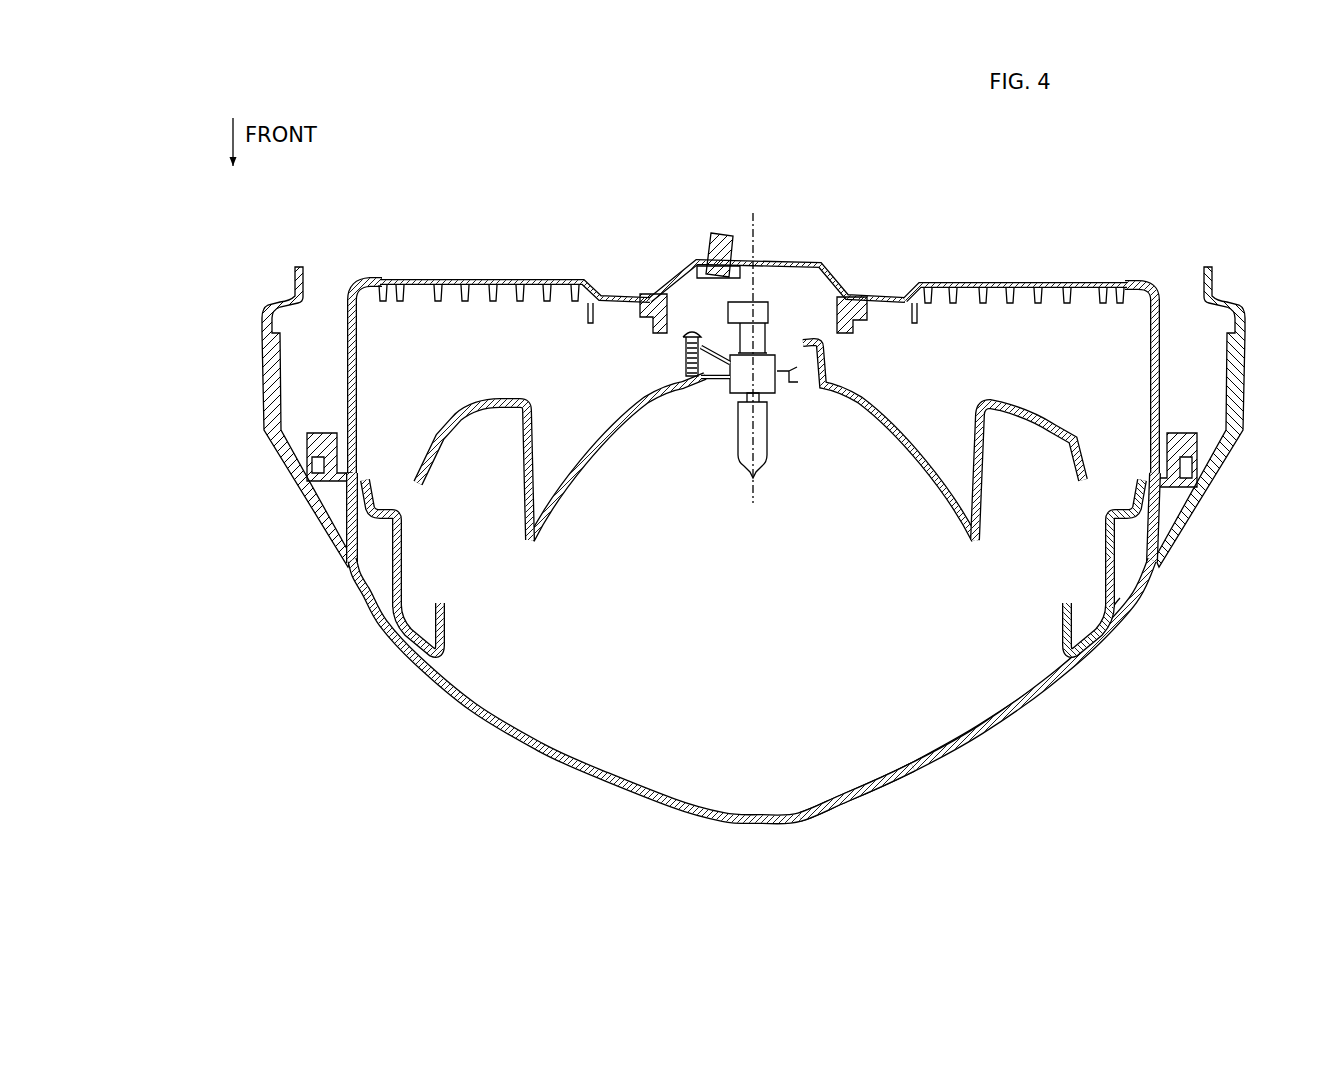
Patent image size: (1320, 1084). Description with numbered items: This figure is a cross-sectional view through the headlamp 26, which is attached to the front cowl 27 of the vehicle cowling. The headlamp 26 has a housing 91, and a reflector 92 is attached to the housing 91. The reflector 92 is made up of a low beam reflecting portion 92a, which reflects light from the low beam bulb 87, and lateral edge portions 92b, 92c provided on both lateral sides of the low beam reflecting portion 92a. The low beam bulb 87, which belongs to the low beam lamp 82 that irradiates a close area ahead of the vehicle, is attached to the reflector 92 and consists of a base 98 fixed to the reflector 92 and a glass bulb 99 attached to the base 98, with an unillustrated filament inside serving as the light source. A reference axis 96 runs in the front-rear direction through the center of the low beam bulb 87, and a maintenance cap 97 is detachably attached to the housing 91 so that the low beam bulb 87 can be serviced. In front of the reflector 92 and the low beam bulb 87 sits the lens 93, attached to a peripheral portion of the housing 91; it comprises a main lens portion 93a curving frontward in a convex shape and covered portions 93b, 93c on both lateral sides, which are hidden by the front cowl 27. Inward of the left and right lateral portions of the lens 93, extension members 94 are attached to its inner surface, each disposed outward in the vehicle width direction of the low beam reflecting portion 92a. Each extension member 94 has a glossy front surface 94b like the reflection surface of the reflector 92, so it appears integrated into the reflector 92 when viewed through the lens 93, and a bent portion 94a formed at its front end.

The headlamp 26 is at (350, 798).
The front cowl 27 is at (262, 437).
The low beam lamp 82 is at (958, 766).
The low beam bulb 87 is at (764, 290).
The housing 91 is at (485, 280).
The reflector 92 is at (861, 394).
The low beam reflecting portion 92a is at (902, 450).
The lateral edge portion 92b is at (1052, 426).
The lateral edge portion 92c is at (455, 418).
The lens 93 is at (758, 681).
The main lens portion 93a is at (856, 804).
The covered portion 93b is at (1163, 512).
The covered portion 93c is at (346, 513).
The extension member 94 is at (757, 597).
The bent portion 94a is at (425, 658).
The front surface 94b is at (383, 583).
The reference axis 96 is at (752, 216).
The maintenance cap 97 is at (667, 278).
The base 98 is at (780, 363).
The glass bulb 99 is at (745, 432).